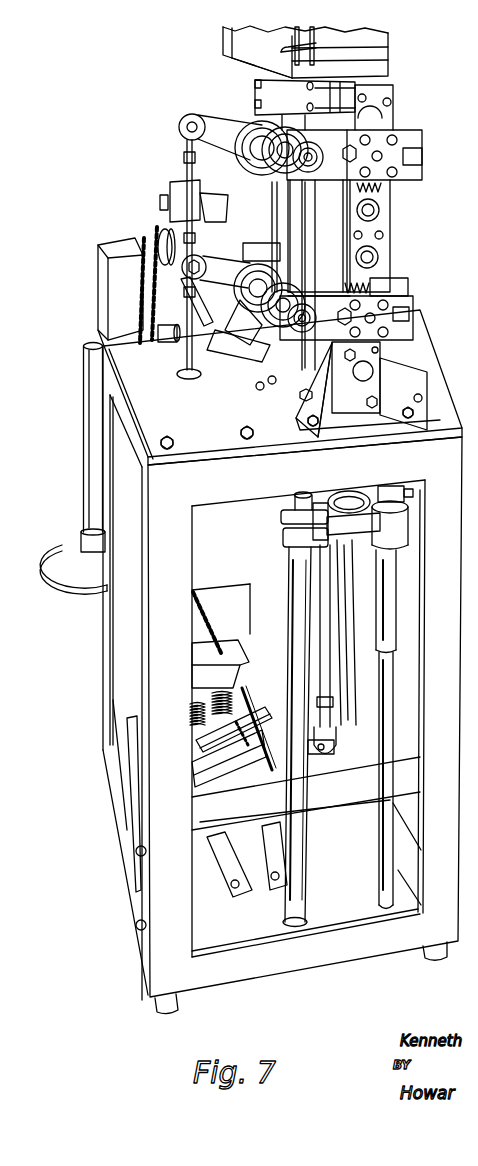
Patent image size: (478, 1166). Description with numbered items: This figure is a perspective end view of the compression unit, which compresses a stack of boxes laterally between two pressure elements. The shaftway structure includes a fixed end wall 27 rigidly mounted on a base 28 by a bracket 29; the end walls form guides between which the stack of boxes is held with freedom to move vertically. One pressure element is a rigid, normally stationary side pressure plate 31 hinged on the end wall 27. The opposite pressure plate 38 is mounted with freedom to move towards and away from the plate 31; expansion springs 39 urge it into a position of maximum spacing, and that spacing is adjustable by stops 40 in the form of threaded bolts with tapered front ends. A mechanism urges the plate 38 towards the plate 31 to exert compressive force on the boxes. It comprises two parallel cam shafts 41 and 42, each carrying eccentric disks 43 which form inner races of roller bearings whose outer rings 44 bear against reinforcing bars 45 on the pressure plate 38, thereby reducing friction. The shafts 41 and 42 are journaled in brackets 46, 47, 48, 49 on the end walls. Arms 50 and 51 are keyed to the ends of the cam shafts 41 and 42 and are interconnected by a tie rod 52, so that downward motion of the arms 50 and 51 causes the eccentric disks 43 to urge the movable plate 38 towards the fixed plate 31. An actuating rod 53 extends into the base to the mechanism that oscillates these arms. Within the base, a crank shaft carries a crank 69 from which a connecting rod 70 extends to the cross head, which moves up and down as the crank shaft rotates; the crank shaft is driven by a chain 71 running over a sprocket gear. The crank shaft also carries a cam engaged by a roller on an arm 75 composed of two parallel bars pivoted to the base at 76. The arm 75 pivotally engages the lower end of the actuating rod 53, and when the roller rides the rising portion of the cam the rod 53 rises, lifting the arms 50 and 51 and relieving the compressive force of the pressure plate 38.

The end wall 27 is at (383, 249).
The base 28 is at (214, 415).
The bracket 29 is at (368, 389).
The side pressure plate 31 is at (396, 225).
The pressure plate 38 is at (338, 252).
The expansion springs 39 is at (385, 190).
The stops 40 is at (350, 149).
The cam shaft 41 is at (313, 162).
The cam shaft 42 is at (308, 320).
The eccentric disks 43 is at (270, 140).
The outer rings 44 is at (237, 160).
The reinforcing bars 45 is at (310, 222).
The bracket 46 is at (247, 118).
The bracket 47 is at (381, 134).
The bracket 48 is at (255, 258).
The bracket 49 is at (333, 339).
The arm 50 is at (179, 121).
The arm 51 is at (209, 262).
The tie rod 52 is at (184, 158).
The actuating rod 53 is at (187, 352).
The crank 69 is at (312, 750).
The connecting rod 70 is at (323, 628).
The chain 71 is at (213, 618).
The arm 75 is at (206, 748).
The pivot 76 is at (266, 762).